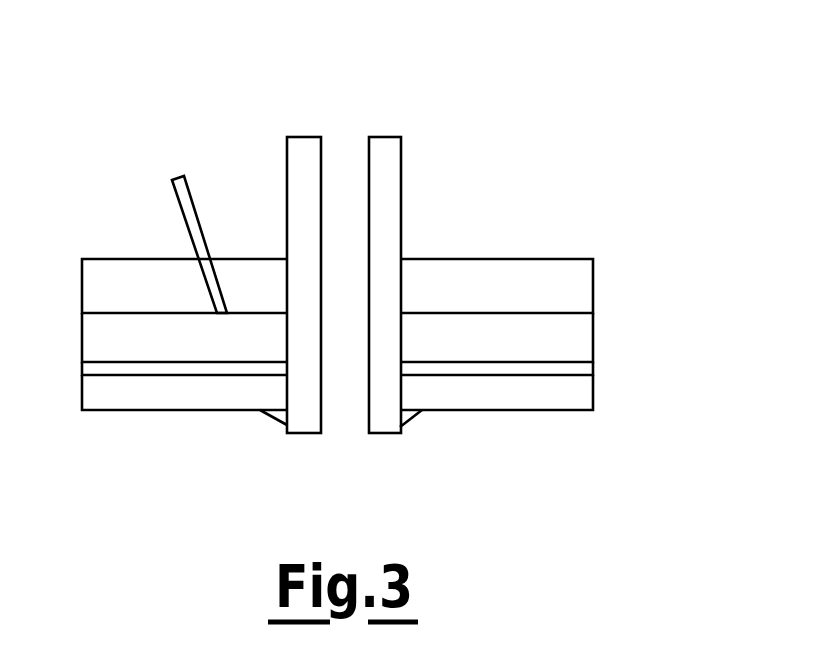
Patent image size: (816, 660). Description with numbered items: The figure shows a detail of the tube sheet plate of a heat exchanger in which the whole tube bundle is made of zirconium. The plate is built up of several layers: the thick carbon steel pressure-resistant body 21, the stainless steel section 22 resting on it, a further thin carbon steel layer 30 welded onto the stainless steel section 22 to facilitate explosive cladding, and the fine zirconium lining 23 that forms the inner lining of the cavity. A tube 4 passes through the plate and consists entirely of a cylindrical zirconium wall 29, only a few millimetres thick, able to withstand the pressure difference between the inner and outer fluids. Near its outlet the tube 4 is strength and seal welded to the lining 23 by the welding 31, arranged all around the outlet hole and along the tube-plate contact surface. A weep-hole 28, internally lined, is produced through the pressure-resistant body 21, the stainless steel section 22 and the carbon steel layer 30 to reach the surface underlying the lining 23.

The tube 4 is at (360, 270).
The pressure-resistant body 21 is at (553, 287).
The stainless steel section 22 is at (550, 335).
The lining 23 is at (520, 393).
The weep-hole 28 is at (197, 230).
The cylindrical zirconium wall 29 is at (303, 152).
The carbon steel layer 30 is at (108, 368).
The welding 31 is at (398, 413).